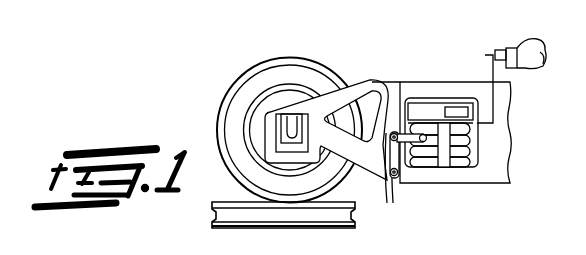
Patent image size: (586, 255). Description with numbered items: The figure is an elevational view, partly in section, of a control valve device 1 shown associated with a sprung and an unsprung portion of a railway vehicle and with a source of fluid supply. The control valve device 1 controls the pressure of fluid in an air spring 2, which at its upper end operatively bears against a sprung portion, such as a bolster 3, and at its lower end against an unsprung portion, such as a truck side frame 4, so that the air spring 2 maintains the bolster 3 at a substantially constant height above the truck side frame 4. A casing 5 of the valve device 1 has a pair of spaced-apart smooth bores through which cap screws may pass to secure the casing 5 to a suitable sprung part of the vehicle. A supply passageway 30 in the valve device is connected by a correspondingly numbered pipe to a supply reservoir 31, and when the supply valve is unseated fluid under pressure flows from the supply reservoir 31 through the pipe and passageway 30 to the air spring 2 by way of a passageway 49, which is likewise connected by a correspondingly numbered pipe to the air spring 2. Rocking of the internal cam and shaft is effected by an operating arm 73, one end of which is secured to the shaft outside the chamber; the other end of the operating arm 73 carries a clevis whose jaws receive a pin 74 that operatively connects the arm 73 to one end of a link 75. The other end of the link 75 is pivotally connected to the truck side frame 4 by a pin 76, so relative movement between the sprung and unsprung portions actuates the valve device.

The control valve device 1 is at (470, 155).
The air spring 2 is at (463, 162).
The bolster 3 is at (460, 108).
The truck side frame 4 is at (380, 92).
The casing 5 is at (442, 140).
The supply passageway 30 is at (481, 86).
The supply reservoir 31 is at (529, 42).
The passageway 49 is at (452, 139).
The operating arm 73 is at (394, 132).
The pin 74 is at (390, 178).
The link 75 is at (391, 198).
The pin 76 is at (400, 174).